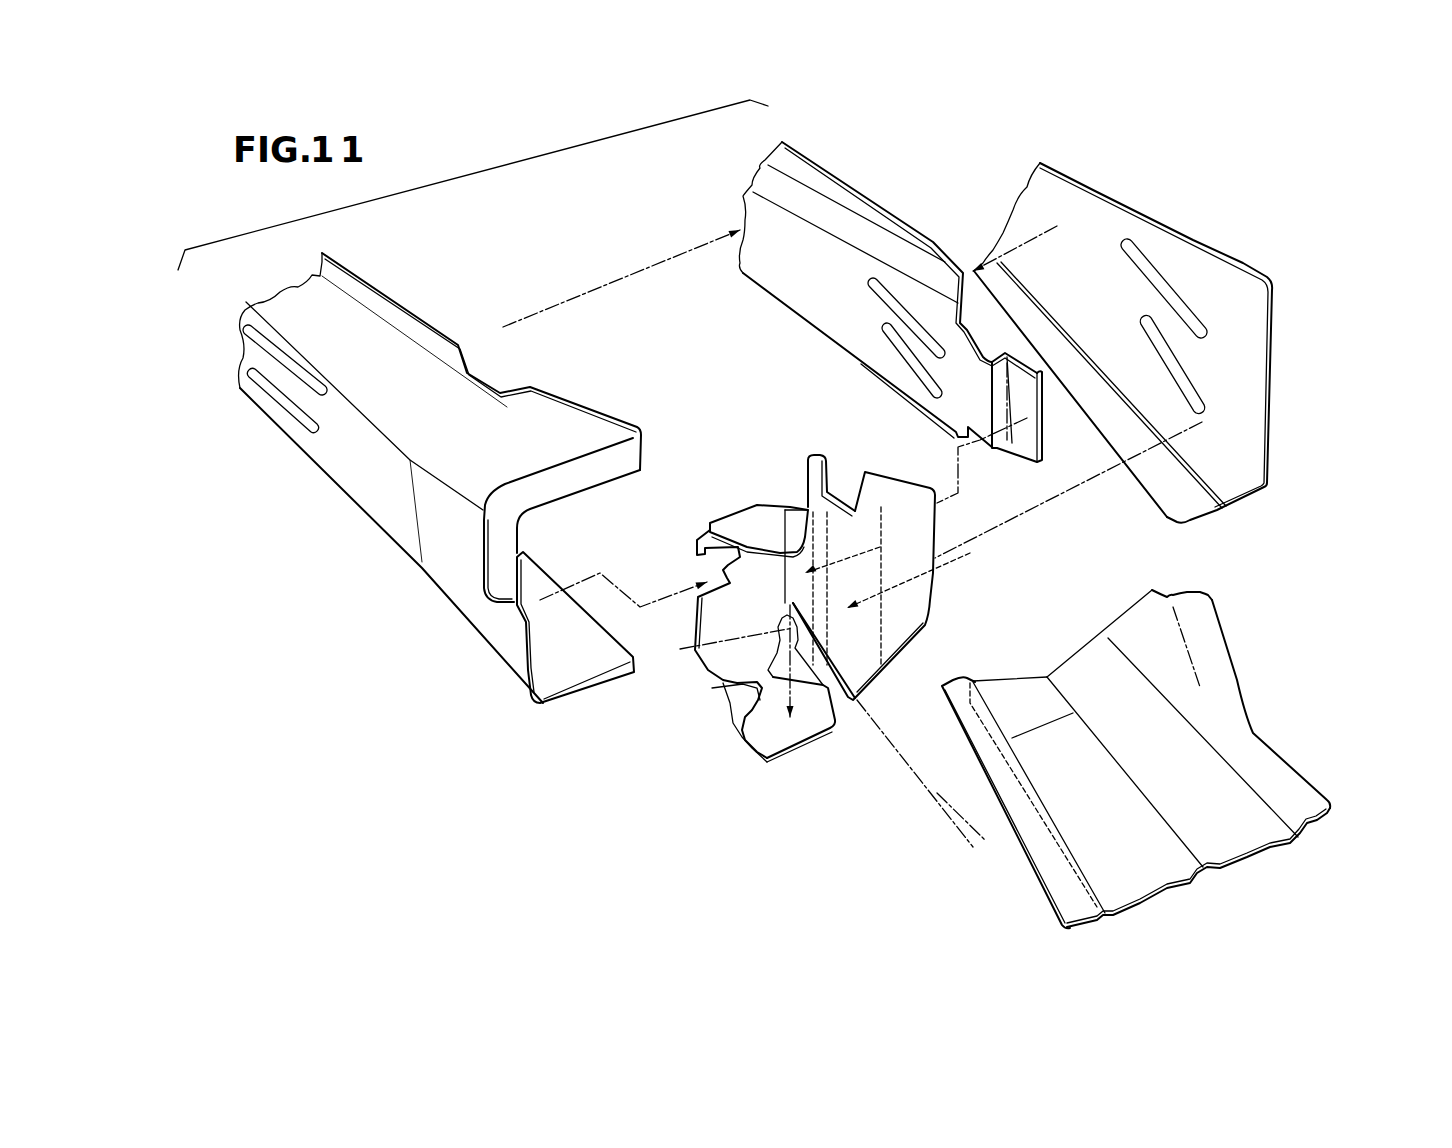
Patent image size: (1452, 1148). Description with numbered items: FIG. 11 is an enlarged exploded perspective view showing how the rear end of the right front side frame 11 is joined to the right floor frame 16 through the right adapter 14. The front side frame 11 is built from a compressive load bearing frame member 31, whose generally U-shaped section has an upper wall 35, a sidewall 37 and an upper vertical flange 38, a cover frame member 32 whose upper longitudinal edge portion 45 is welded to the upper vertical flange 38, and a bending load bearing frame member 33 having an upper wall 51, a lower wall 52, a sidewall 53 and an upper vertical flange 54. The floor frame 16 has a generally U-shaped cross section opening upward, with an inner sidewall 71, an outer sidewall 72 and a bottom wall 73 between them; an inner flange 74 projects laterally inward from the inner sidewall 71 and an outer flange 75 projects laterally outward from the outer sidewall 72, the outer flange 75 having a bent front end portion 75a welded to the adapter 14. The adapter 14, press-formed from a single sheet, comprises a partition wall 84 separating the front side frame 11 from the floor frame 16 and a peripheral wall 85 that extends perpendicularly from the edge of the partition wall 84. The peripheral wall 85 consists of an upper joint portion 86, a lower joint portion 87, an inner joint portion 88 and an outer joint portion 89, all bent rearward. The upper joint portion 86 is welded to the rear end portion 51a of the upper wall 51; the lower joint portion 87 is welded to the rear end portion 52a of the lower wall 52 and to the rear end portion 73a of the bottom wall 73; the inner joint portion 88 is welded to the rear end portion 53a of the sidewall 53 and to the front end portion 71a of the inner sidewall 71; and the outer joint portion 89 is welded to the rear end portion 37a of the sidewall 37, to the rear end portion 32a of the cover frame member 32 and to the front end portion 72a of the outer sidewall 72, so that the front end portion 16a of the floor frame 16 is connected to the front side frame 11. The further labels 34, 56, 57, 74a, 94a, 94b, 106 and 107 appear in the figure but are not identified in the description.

The front side frame 11 is at (1165, 324).
The adapter 14 is at (827, 625).
The floor frame 16 is at (1128, 731).
The front end portion of floor frame 16a is at (1237, 743).
The compressive load bearing frame member 31 is at (921, 292).
The cover frame member 32 is at (1165, 328).
The rear end portion of cover frame member 32a is at (1250, 397).
The bending load bearing frame member 33 is at (358, 480).
The cross member 34 is at (582, 544).
The upper wall 35 is at (817, 203).
The sidewall 37 is at (840, 315).
The rear end portion of sidewall 37a is at (1023, 390).
The upper vertical flange 38 is at (880, 218).
The upper longitudinal edge portion 45 is at (1062, 198).
The upper wall 51 is at (421, 400).
The rear end portion of upper wall 51a is at (560, 453).
The lower wall 52 is at (537, 580).
The rear end portion of lower wall 52a is at (560, 667).
The sidewall 53 is at (393, 516).
The rear end portion of sidewall 53a is at (507, 628).
The upper vertical flange 54 is at (542, 403).
The corner bend 56 is at (548, 493).
The bent edge 57 is at (500, 565).
The inner sidewall 71 is at (932, 793).
The front end portion of inner sidewall 71a is at (968, 722).
The outer sidewall 72 is at (1248, 828).
The front end portion of outer sidewall 72a is at (1082, 662).
The bottom wall 73 is at (1107, 797).
The rear end portion of bottom wall 73a is at (1013, 700).
The inner flange 74 is at (1048, 860).
The front flange end 74a is at (950, 692).
The outer flange 75 is at (1277, 780).
The front end portion of outer flange 75a is at (1132, 615).
The partition wall 84 is at (755, 563).
The peripheral wall 85 is at (937, 587).
The upper joint portion 86 is at (771, 520).
The lower joint portion 87 is at (788, 730).
The inner joint portion 88 is at (732, 697).
The outer joint portion 89 is at (932, 527).
The upper hook 94a is at (697, 628).
The lower hook 94b is at (713, 660).
The tab 106 is at (812, 513).
The inclined edge 107 is at (866, 630).